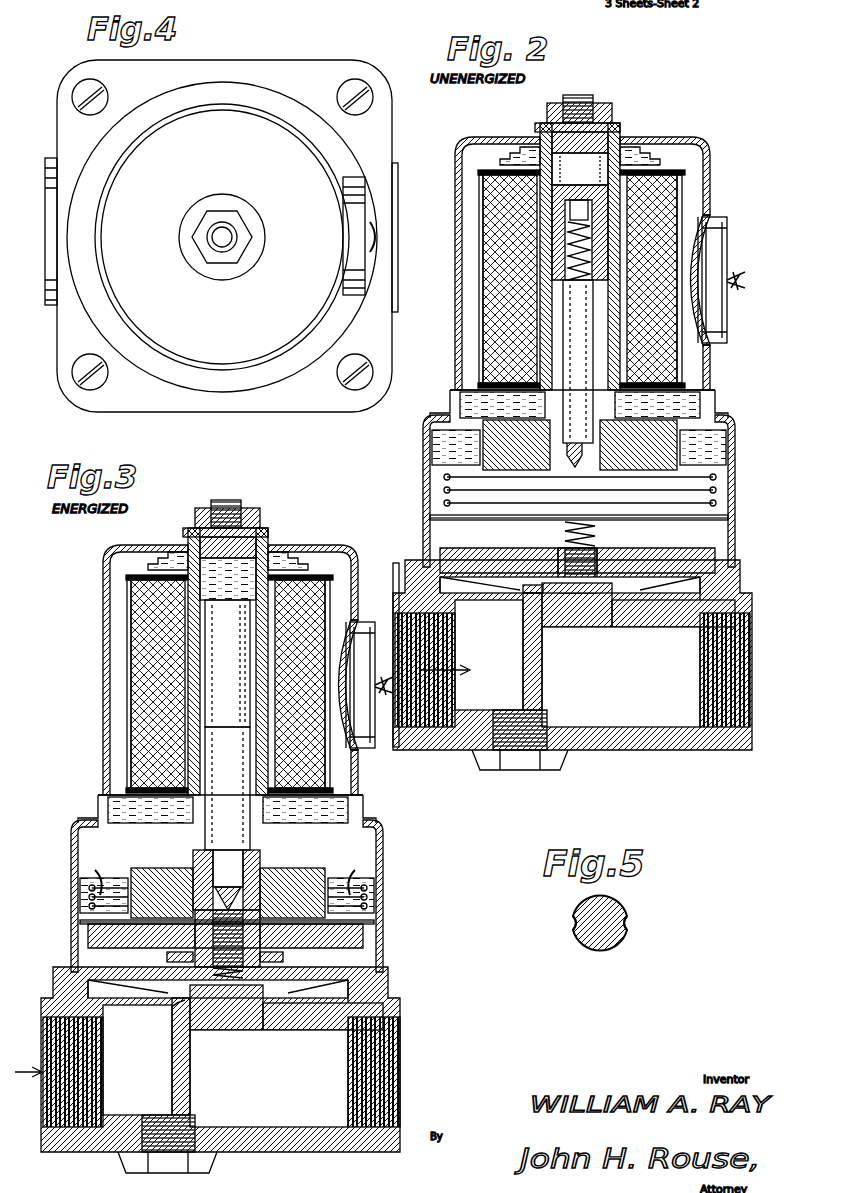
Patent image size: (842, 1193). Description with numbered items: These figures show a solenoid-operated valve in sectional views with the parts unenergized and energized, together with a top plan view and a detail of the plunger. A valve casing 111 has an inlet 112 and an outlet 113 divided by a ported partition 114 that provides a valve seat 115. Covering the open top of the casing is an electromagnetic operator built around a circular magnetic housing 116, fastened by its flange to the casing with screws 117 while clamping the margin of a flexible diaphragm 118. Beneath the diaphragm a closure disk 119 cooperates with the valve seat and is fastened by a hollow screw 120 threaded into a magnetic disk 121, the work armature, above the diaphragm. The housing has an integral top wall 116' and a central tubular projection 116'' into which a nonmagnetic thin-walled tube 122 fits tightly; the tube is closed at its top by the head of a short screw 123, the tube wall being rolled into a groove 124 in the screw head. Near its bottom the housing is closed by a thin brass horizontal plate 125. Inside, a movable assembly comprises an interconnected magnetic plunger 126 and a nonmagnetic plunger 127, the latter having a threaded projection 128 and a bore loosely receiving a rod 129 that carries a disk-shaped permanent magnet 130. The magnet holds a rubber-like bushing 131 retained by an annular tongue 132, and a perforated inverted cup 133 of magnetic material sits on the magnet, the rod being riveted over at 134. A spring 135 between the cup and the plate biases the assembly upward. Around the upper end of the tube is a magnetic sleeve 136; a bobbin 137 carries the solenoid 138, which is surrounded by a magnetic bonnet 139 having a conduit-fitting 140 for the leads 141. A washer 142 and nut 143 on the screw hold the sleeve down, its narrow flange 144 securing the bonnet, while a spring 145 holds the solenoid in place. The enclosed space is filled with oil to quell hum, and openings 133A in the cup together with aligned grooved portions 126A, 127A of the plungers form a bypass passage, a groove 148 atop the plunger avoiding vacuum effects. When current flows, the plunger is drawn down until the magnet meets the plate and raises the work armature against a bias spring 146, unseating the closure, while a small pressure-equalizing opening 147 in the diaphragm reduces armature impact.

In FIG. 2, the valve casing 111 is at (630, 745).
In FIG. 3, the valve casing 111 is at (278, 1148).
In FIG. 2, the inlet 112 is at (459, 663).
In FIG. 3, the inlet 112 is at (93, 1066).
In FIG. 2, the outlet 113 is at (646, 670).
In FIG. 3, the outlet 113 is at (295, 1072).
In FIG. 2, the ported partition 114 is at (545, 665).
In FIG. 3, the ported partition 114 is at (190, 1065).
In FIG. 3, the valve seat 115 is at (156, 1014).
In FIG. 4, the circular housing 116 is at (222, 274).
In FIG. 2, the circular housing 116 is at (599, 491).
In FIG. 3, the circular housing 116 is at (247, 896).
In FIG. 2, the top wall 116' is at (559, 393).
In FIG. 3, the top wall 116' is at (230, 809).
In FIG. 2, the tubular projection 116'' is at (570, 384).
In FIG. 3, the tubular projection 116'' is at (214, 778).
In FIG. 4, the screws 117 is at (350, 397).
In FIG. 2, the flexible diaphragm 118 is at (700, 590).
In FIG. 3, the flexible diaphragm 118 is at (333, 980).
In FIG. 2, the closure disk 119 is at (640, 592).
In FIG. 3, the closure disk 119 is at (286, 975).
In FIG. 2, the hollow screw 120 is at (600, 598).
In FIG. 3, the hollow screw 120 is at (190, 966).
In FIG. 2, the disk 121 is at (480, 555).
In FIG. 3, the disk 121 is at (360, 942).
In FIG. 2, the thin-walled tube 122 is at (565, 315).
In FIG. 3, the thin-walled tube 122 is at (200, 709).
In FIG. 4, the short screw 123 is at (226, 240).
In FIG. 2, the short screw 123 is at (580, 98).
In FIG. 3, the short screw 123 is at (230, 500).
In FIG. 3, the groove 124 is at (228, 579).
In FIG. 2, the horizontal plate 125 is at (660, 522).
In FIG. 3, the horizontal plate 125 is at (82, 945).
In FIG. 2, the plunger 126 is at (483, 200).
In FIG. 3, the plunger 126 is at (200, 656).
In FIG. 5, the plunger 126 is at (628, 908).
In FIG. 5, the grooved portion 126A is at (573, 922).
In FIG. 2, the plunger 127 is at (600, 270).
In FIG. 3, the plunger 127 is at (205, 768).
In FIG. 5, the grooved portion 127A is at (627, 922).
In FIG. 2, the projection 128 is at (555, 256).
In FIG. 2, the rod 129 is at (550, 333).
In FIG. 3, the rod 129 is at (210, 840).
In FIG. 2, the permanent magnet 130 is at (470, 462).
In FIG. 3, the permanent magnet 130 is at (165, 868).
In FIG. 2, the bushing 131 is at (502, 405).
In FIG. 3, the bushing 131 is at (250, 860).
In FIG. 2, the annular tongue 132 is at (657, 405).
In FIG. 3, the annular tongue 132 is at (265, 870).
In FIG. 2, the inverted cup 133 is at (432, 440).
In FIG. 3, the inverted cup 133 is at (80, 868).
In FIG. 3, the openings 133A is at (90, 860).
In FIG. 2, the riveted end 134 is at (597, 548).
In FIG. 2, the spring 135 is at (440, 490).
In FIG. 3, the spring 135 is at (85, 897).
In FIG. 2, the sleeve 136 is at (545, 222).
In FIG. 3, the sleeve 136 is at (193, 606).
In FIG. 2, the bobbin 137 is at (690, 165).
In FIG. 3, the bobbin 137 is at (318, 575).
In FIG. 2, the solenoid 138 is at (690, 202).
In FIG. 3, the solenoid 138 is at (345, 590).
In FIG. 4, the bonnet 139 is at (200, 355).
In FIG. 2, the bonnet 139 is at (458, 162).
In FIG. 3, the bonnet 139 is at (105, 568).
In FIG. 2, the conduit-fitting 140 is at (727, 252).
In FIG. 2, the leads 141 is at (744, 294).
In FIG. 4, the washer 142 is at (258, 222).
In FIG. 2, the washer 142 is at (615, 123).
In FIG. 3, the washer 142 is at (260, 530).
In FIG. 4, the nut 143 is at (240, 240).
In FIG. 2, the nut 143 is at (612, 110).
In FIG. 3, the nut 143 is at (260, 515).
In FIG. 2, the flange 144 is at (540, 130).
In FIG. 3, the flange 144 is at (188, 537).
In FIG. 2, the spring 145 is at (650, 147).
In FIG. 3, the spring 145 is at (270, 552).
In FIG. 2, the bias spring 146 is at (565, 534).
In FIG. 3, the bias spring 146 is at (228, 962).
In FIG. 2, the pressure-equalizing opening 147 is at (455, 592).
In FIG. 3, the pressure-equalizing opening 147 is at (103, 990).
In FIG. 3, the groove 148 is at (218, 616).